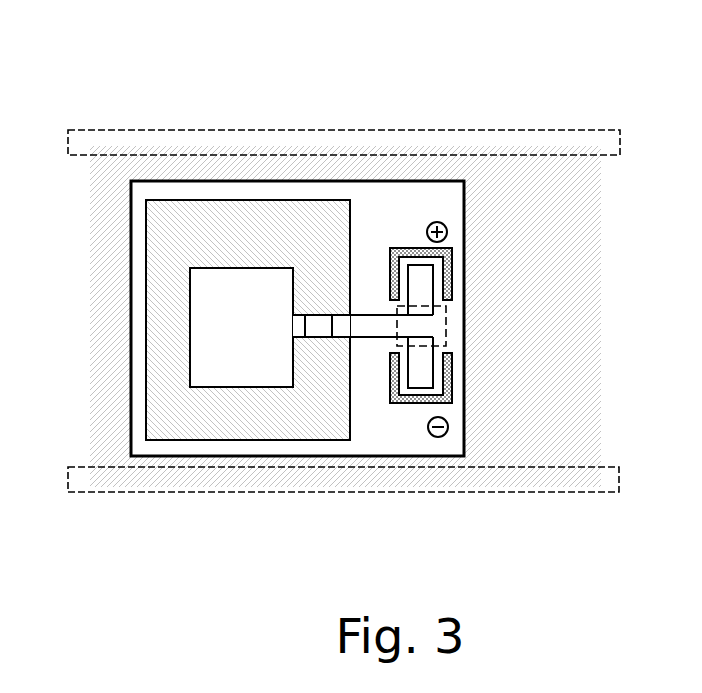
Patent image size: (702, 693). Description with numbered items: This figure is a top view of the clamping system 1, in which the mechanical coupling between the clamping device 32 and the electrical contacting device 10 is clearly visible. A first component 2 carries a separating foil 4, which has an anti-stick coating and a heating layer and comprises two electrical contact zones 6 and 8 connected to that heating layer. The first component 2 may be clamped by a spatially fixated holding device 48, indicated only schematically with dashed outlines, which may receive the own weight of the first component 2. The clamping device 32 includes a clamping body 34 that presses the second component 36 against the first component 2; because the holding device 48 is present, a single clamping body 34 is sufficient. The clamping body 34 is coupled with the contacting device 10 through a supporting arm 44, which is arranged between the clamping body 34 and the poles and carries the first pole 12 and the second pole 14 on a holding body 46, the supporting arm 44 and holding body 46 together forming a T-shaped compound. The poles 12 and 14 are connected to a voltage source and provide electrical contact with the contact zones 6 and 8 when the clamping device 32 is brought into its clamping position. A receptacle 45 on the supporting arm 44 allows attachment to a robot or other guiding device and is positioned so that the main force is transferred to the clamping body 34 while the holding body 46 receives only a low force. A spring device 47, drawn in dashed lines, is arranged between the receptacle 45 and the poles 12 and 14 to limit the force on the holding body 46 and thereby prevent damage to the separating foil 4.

The clamping system 1 is at (339, 296).
The first component 2 is at (378, 150).
The separating foil 4 is at (443, 196).
The electrical contact zone 6 is at (453, 387).
The electrical contact zone 8 is at (453, 283).
The electrical contacting device 10 is at (377, 368).
The first pole 12 is at (523, 387).
The second pole 14 is at (523, 262).
The clamping device 32 is at (341, 282).
The clamping body 34 is at (232, 305).
The second component 36 is at (162, 402).
The supporting arm 44 is at (359, 326).
The receptacle 45 is at (321, 324).
The holding body 46 is at (418, 293).
The spring device 47 is at (438, 333).
The holding device 48 is at (576, 140).